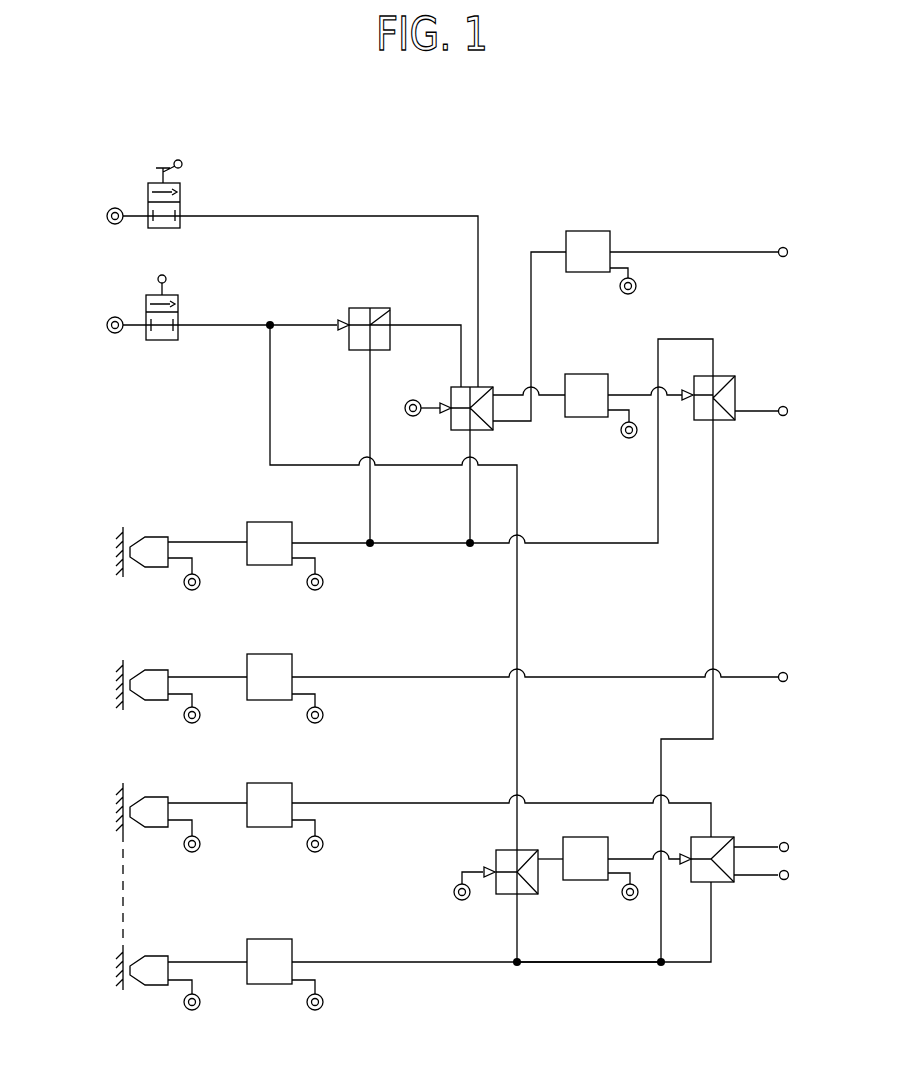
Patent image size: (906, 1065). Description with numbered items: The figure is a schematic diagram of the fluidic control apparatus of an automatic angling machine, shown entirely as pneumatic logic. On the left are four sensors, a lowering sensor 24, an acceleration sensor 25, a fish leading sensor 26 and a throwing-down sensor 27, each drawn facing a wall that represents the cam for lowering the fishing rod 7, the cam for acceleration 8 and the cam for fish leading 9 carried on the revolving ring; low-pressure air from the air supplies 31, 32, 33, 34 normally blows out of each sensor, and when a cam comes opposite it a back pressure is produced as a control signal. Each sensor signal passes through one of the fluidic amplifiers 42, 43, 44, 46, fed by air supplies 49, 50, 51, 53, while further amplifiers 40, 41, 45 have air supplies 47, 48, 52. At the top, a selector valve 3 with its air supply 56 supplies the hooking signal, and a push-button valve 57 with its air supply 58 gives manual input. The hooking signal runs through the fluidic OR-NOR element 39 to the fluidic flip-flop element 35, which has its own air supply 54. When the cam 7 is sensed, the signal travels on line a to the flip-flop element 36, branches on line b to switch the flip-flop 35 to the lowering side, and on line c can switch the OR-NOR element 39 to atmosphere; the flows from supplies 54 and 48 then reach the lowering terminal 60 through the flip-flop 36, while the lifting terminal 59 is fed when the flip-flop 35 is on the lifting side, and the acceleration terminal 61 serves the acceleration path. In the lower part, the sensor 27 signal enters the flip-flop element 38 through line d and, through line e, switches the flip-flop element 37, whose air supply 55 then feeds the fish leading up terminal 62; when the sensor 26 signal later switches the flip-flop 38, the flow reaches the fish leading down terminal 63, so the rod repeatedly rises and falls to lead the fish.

The selector valve 3 is at (147, 298).
The cam for lowering the fishing rod 7 is at (123, 548).
The cam for acceleration 8 is at (123, 686).
The cam for fish leading 9 is at (123, 815).
The lowering sensor 24 is at (157, 537).
The acceleration sensor 25 is at (157, 670).
The fish leading sensor 26 is at (158, 797).
The throwing-down sensor 27 is at (158, 957).
The air supply 31 is at (192, 590).
The air supply 32 is at (192, 723).
The air supply 33 is at (192, 852).
The air supply 34 is at (192, 1010).
The fluidic flip-flop element 35 is at (453, 387).
The fluidic flip-flop element 36 is at (732, 376).
The fluidic flip-flop element 37 is at (496, 850).
The fluidic flip-flop element 38 is at (712, 837).
The fluidic OR-NOR element 39 is at (351, 308).
The fluidic amplifier 40 is at (592, 231).
The fluidic amplifier 41 is at (568, 374).
The fluidic amplifier 42 is at (247, 522).
The fluidic amplifier 43 is at (248, 654).
The fluidic amplifier 44 is at (249, 783).
The fluidic amplifier 45 is at (601, 837).
The fluidic amplifier 46 is at (247, 939).
The air supply 47 is at (636, 286).
The air supply 48 is at (621, 430).
The air supply 49 is at (315, 590).
The air supply 50 is at (315, 723).
The air supply 51 is at (315, 852).
The air supply 52 is at (624, 898).
The air supply 53 is at (315, 1010).
The air supply 54 is at (416, 417).
The air supply 55 is at (457, 899).
The air supply 56 is at (111, 332).
The push-button valve 57 is at (148, 188).
The air supply 58 is at (116, 224).
The lifting terminal 59 is at (783, 257).
The lowering terminal 60 is at (783, 416).
The acceleration terminal 61 is at (783, 682).
The fish leading up terminal 62 is at (784, 842).
The fish leading down terminal 63 is at (784, 880).
The line a is at (574, 543).
The line b is at (470, 500).
The line c is at (367, 404).
The line d is at (598, 962).
The line e is at (518, 945).